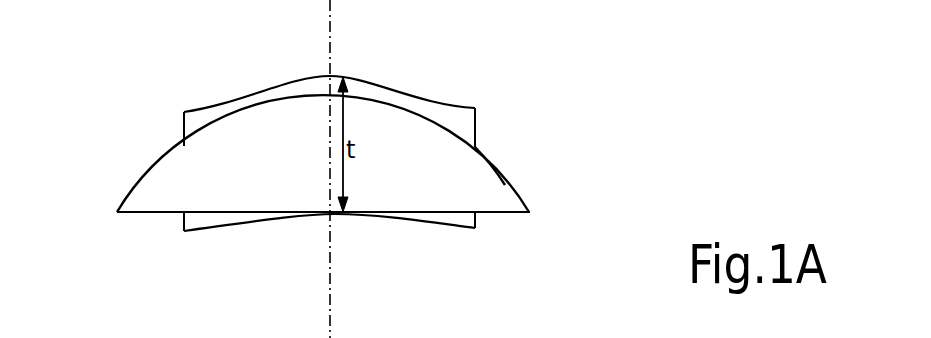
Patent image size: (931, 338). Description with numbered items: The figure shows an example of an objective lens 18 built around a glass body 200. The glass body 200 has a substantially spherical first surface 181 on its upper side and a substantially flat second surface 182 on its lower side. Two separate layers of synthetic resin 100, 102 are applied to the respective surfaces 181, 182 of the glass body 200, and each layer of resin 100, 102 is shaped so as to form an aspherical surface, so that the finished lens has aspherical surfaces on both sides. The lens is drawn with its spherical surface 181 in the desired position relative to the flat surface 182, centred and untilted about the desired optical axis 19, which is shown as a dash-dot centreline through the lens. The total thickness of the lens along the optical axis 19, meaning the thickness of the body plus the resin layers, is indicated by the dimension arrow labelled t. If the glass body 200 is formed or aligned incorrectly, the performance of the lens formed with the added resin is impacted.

The optical axis 19 is at (330, 22).
The glass body 200 is at (153, 165).
The objective lens 18 is at (565, 192).
The layer of resin 100 is at (261, 92).
The layer of resin 102 is at (200, 233).
The substantially spherical surface 181 is at (490, 162).
The substantially flat surface 182 is at (505, 214).